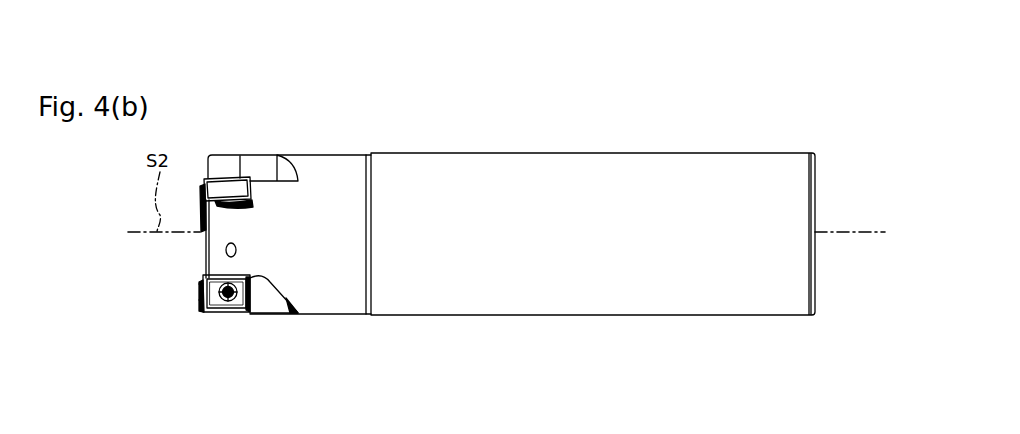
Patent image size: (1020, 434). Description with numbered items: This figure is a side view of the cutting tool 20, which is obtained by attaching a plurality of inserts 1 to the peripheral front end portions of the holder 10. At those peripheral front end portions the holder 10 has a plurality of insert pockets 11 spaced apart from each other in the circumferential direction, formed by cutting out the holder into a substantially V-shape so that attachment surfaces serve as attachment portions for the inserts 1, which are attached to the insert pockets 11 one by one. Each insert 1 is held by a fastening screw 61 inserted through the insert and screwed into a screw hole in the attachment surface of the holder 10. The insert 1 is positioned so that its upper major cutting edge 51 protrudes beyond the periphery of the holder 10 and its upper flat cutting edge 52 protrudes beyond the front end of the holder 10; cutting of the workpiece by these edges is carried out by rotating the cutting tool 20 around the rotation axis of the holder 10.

The cutting tool 20 is at (457, 71).
The holder 10 is at (438, 152).
The insert 1 is at (228, 173).
The insert pocket 11 is at (262, 171).
The fastening screw 61 is at (236, 282).
The upper major cutting edge 51 is at (221, 318).
The upper flat cutting edge 52 is at (200, 302).